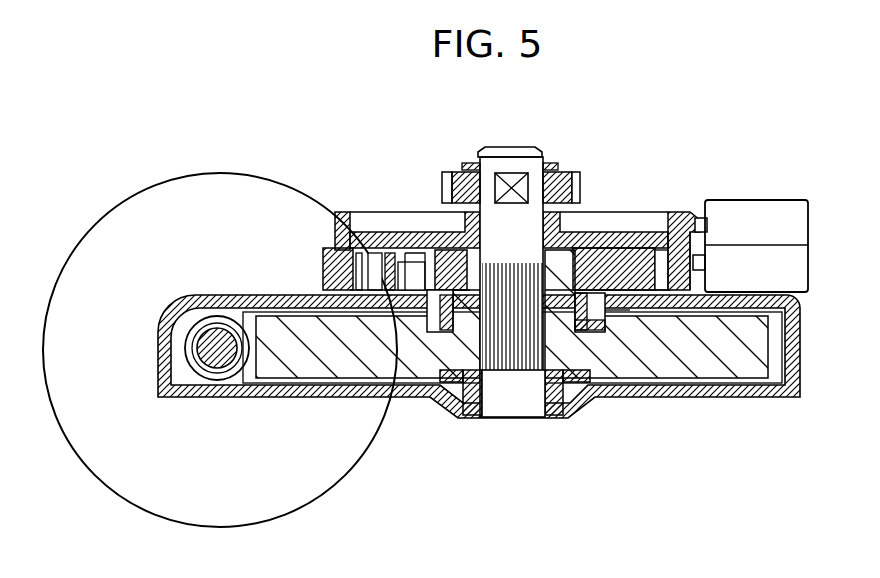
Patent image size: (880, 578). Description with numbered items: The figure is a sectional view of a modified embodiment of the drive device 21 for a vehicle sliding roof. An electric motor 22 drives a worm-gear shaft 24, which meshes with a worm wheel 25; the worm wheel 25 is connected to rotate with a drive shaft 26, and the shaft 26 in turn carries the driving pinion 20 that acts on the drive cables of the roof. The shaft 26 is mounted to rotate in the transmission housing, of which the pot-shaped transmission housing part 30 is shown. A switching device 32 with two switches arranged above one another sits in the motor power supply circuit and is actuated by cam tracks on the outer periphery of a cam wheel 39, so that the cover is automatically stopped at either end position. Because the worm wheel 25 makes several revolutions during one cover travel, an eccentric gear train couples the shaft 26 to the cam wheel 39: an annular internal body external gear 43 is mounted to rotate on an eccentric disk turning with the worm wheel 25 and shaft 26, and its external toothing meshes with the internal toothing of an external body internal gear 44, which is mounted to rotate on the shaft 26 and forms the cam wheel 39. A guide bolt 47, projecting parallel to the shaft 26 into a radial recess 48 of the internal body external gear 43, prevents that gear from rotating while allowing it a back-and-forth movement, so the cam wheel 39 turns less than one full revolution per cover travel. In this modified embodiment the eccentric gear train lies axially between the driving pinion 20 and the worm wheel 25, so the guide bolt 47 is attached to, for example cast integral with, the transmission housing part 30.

The driving pinion 20 is at (463, 168).
The drive device 21 is at (658, 151).
The electric motor 22 is at (315, 477).
The worm-gear shaft 24 is at (217, 348).
The worm wheel 25 is at (703, 352).
The drive shaft 26 is at (517, 392).
The pot-shaped transmission housing part 30 is at (295, 296).
The switching device 32 is at (792, 199).
The cam wheel 39 is at (695, 212).
The internal body external gear 43 is at (617, 250).
The external body internal gear 44 is at (347, 212).
The guide bolt 47 is at (407, 212).
The radial recess 48 is at (431, 332).